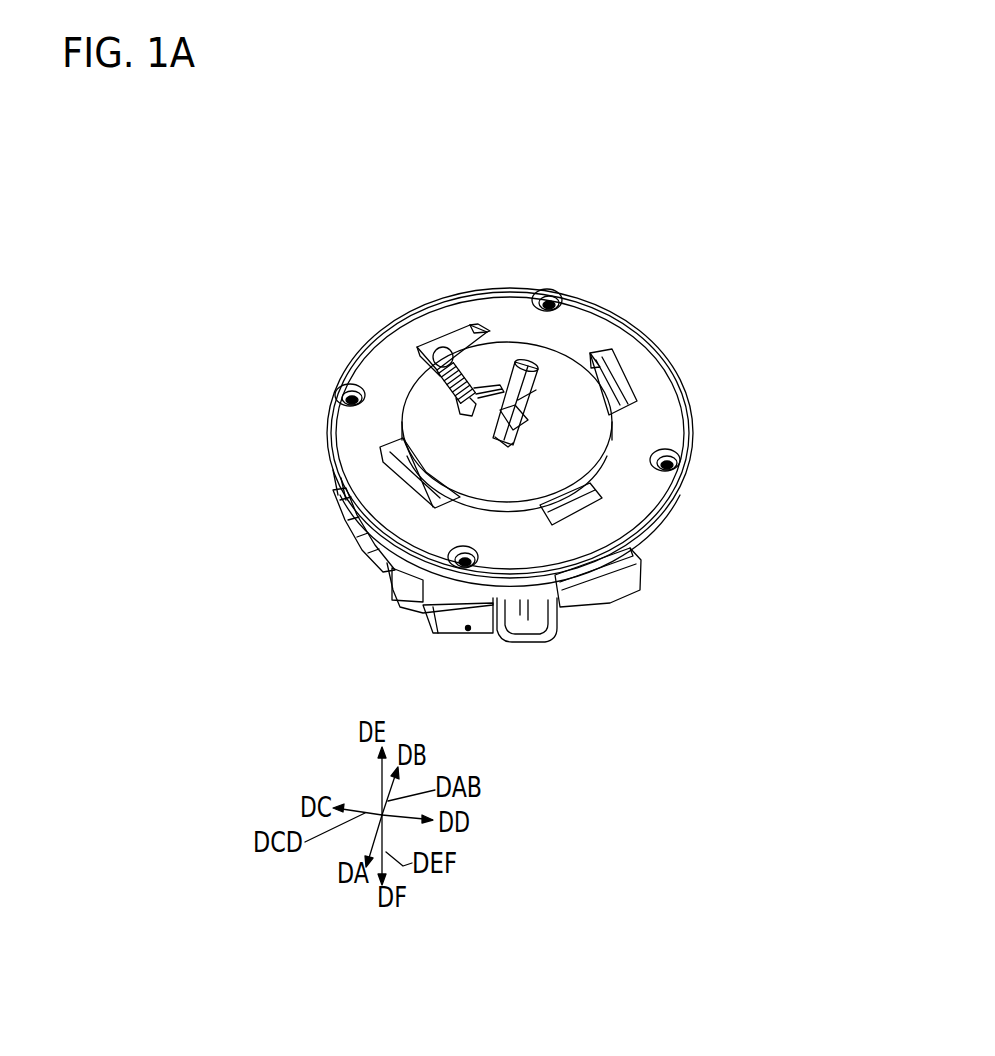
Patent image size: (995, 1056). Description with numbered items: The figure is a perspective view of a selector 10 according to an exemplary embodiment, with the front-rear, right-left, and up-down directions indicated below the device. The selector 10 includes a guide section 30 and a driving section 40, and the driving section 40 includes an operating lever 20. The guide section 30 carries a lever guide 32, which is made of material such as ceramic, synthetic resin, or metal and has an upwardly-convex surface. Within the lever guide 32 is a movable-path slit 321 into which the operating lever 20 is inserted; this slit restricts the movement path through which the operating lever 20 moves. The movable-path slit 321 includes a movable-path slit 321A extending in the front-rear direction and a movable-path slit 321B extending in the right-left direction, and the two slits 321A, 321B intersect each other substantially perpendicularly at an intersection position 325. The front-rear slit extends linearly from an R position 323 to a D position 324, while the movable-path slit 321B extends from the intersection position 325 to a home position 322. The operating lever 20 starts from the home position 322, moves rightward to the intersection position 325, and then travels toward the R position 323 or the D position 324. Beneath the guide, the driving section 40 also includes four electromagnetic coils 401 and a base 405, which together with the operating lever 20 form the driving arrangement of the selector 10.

The selector 10 is at (383, 278).
The operating lever 20 is at (417, 352).
The guide section 30 is at (356, 441).
The lever guide 32 is at (557, 363).
The driving section 40 is at (391, 622).
The movable-path slit 321 is at (490, 378).
The movable-path slit 321A is at (523, 418).
The movable-path slit 321B is at (500, 388).
The home position 322 is at (457, 410).
The R position 323 is at (527, 358).
The D position 324 is at (508, 443).
The intersection position 325 is at (607, 358).
The electromagnetic coil 401 is at (372, 543).
The base 405 is at (448, 594).